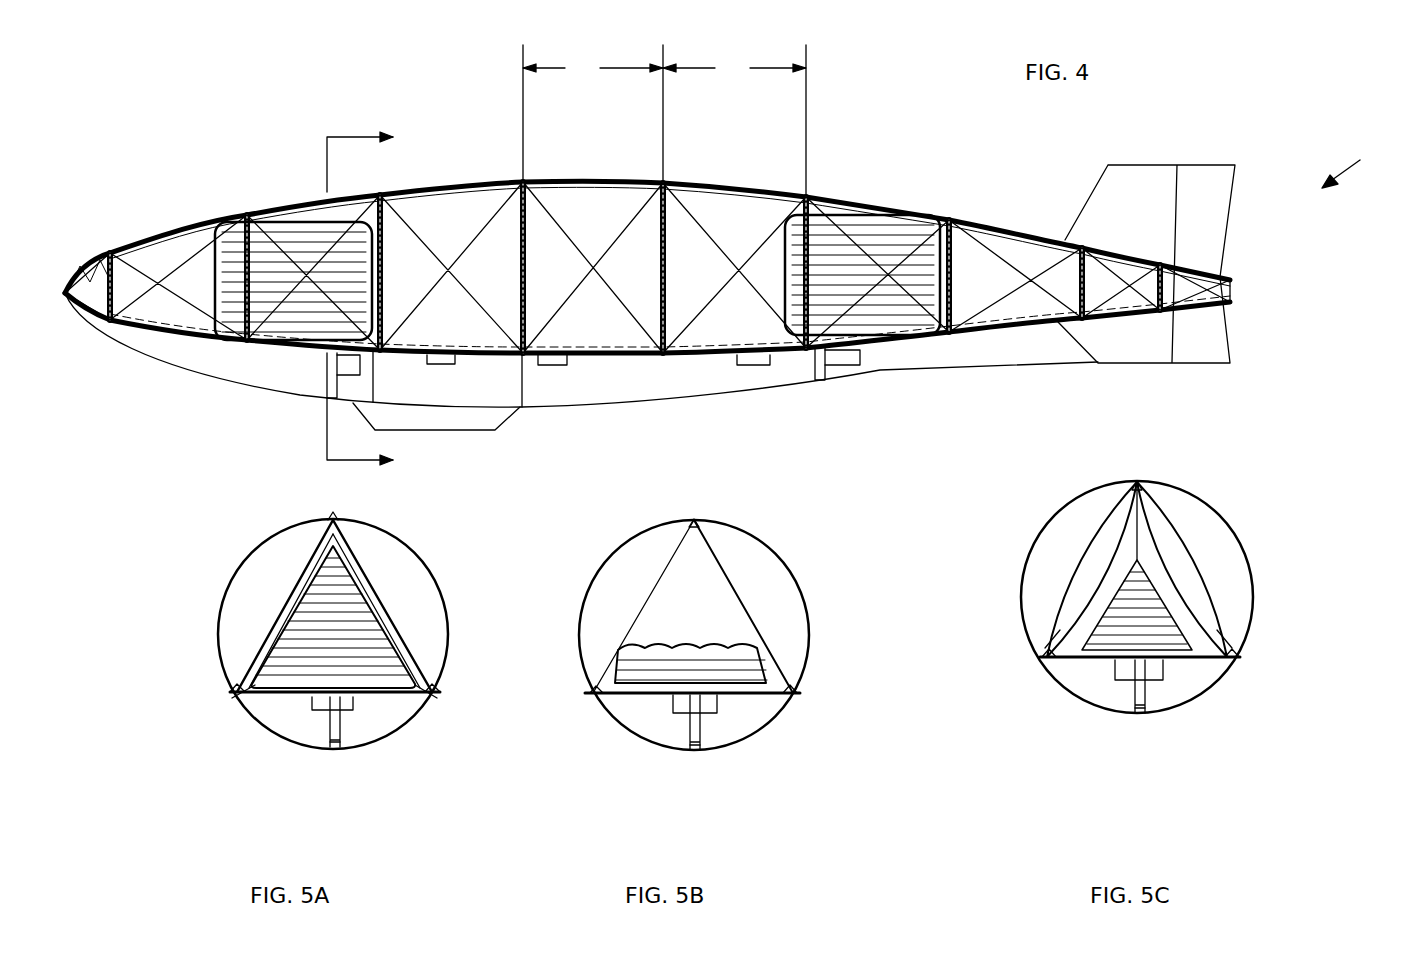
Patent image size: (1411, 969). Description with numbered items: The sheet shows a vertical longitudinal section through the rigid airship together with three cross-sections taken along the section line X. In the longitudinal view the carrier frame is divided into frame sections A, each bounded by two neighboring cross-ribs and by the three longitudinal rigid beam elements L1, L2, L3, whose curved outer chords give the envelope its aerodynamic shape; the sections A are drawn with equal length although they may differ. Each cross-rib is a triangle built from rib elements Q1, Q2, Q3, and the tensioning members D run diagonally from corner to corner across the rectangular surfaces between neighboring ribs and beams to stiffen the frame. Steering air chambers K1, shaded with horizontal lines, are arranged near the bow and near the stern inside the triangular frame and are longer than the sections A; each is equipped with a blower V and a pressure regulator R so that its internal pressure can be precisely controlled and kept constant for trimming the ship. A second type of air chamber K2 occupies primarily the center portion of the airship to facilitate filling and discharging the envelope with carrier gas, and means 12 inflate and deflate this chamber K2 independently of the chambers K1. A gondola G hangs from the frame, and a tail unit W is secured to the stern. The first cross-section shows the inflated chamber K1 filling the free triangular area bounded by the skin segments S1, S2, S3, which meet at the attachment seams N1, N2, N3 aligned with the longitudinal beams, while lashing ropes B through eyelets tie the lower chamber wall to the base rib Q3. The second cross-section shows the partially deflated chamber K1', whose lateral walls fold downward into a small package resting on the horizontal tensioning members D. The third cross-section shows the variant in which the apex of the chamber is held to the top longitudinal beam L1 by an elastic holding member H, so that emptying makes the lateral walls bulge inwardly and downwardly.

In FIG. 4, the top longitudinal rigid beam element L1 is at (590, 183).
In FIG. 5A, the top longitudinal rigid beam element L1 is at (333, 518).
In FIG. 5B, the top longitudinal rigid beam element L1 is at (695, 518).
In FIG. 5C, the top longitudinal rigid beam element L1 is at (1135, 482).
In FIG. 5A, the longitudinal rigid beam element L2 is at (437, 688).
In FIG. 5B, the longitudinal rigid beam element L2 is at (795, 695).
In FIG. 5C, the longitudinal rigid beam element L2 is at (1240, 662).
In FIG. 4, the longitudinal rigid beam element L3 is at (595, 356).
In FIG. 5A, the longitudinal rigid beam element L3 is at (232, 690).
In FIG. 5B, the longitudinal rigid beam element L3 is at (592, 695).
In FIG. 5C, the longitudinal rigid beam element L3 is at (1045, 660).
In FIG. 4, the first rib element Q1 is at (668, 225).
In FIG. 5A, the first rib element Q1 is at (292, 592).
In FIG. 5B, the first rib element Q1 is at (660, 580).
In FIG. 5C, the first rib element Q1 is at (1110, 528).
In FIG. 5A, the second rib element Q2 is at (378, 607).
In FIG. 5B, the second rib element Q2 is at (735, 595).
In FIG. 5C, the second rib element Q2 is at (1170, 530).
In FIG. 5A, the third rib element Q3 is at (297, 695).
In FIG. 5B, the third rib element Q3 is at (728, 695).
In FIG. 5C, the third rib element Q3 is at (1175, 660).
In FIG. 4, the tensioning members D is at (490, 210).
In FIG. 4, the steering air chamber K1 is at (586, 249).
In FIG. 5A, the steering air chamber K1 is at (282, 617).
In FIG. 5B, the partially deflated steering air chamber K1' is at (745, 651).
In FIG. 4, the second type of air chamber K2 is at (600, 356).
In FIG. 4, the gondola G is at (495, 425).
In FIG. 4, the blower V is at (330, 395).
In FIG. 5A, the blower V is at (343, 737).
In FIG. 5B, the blower V is at (698, 752).
In FIG. 5C, the blower V is at (1140, 715).
In FIG. 4, the pressure regulator R is at (350, 365).
In FIG. 5A, the pressure regulator R is at (355, 712).
In FIG. 5B, the pressure regulator R is at (675, 708).
In FIG. 5C, the pressure regulator R is at (1120, 675).
In FIG. 4, the means for inflating and deflating the further air chamber 12 is at (428, 362).
In FIG. 4, the frame section A is at (664, 121).
In FIG. 4, the section line X is at (370, 300).
In FIG. 4, the tail unit W is at (1352, 160).
In FIG. 5C, the elastic holding member H is at (1135, 484).
In FIG. 5A, the skin segment S1 is at (448, 625).
In FIG. 5B, the skin segment S1 is at (790, 585).
In FIG. 5C, the skin segment S1 is at (1245, 548).
In FIG. 5A, the skin segment S2 is at (420, 718).
In FIG. 5B, the skin segment S2 is at (758, 735).
In FIG. 5C, the skin segment S2 is at (1215, 688).
In FIG. 5A, the skin segment S3 is at (220, 605).
In FIG. 5B, the skin segment S3 is at (590, 578).
In FIG. 5C, the skin segment S3 is at (1035, 545).
In FIG. 5A, the attachment seam N1 is at (348, 520).
In FIG. 5B, the attachment seam N1 is at (672, 516).
In FIG. 5C, the attachment seam N1 is at (1150, 475).
In FIG. 5A, the attachment seam N2 is at (462, 650).
In FIG. 5B, the attachment seam N2 is at (813, 682).
In FIG. 5C, the attachment seam N2 is at (1268, 640).
In FIG. 5A, the attachment seam N3 is at (238, 718).
In FIG. 5B, the attachment seam N3 is at (594, 706).
In FIG. 5C, the attachment seam N3 is at (1042, 678).
In FIG. 5A, the lashing ropes B is at (240, 712).
In FIG. 5C, the lashing ropes B is at (1050, 650).